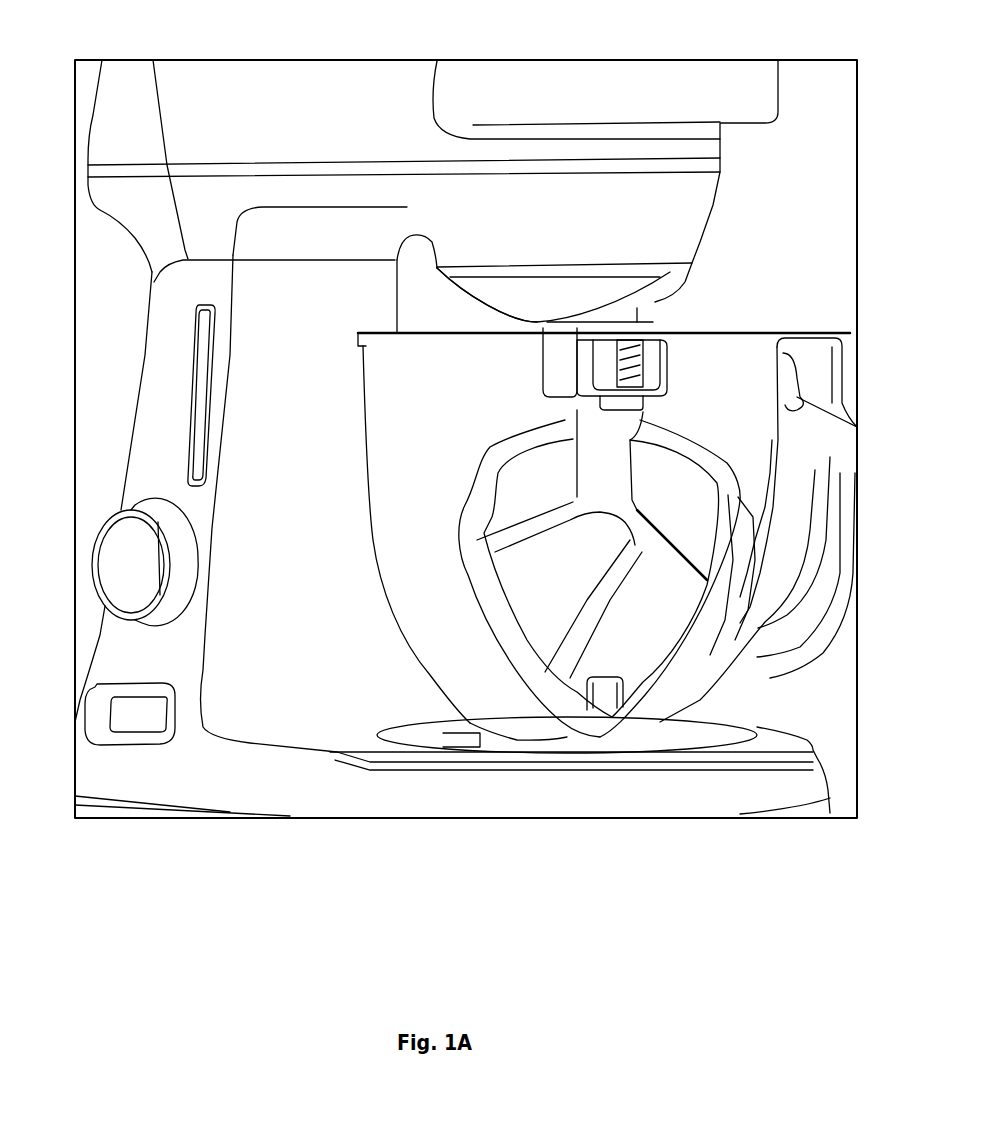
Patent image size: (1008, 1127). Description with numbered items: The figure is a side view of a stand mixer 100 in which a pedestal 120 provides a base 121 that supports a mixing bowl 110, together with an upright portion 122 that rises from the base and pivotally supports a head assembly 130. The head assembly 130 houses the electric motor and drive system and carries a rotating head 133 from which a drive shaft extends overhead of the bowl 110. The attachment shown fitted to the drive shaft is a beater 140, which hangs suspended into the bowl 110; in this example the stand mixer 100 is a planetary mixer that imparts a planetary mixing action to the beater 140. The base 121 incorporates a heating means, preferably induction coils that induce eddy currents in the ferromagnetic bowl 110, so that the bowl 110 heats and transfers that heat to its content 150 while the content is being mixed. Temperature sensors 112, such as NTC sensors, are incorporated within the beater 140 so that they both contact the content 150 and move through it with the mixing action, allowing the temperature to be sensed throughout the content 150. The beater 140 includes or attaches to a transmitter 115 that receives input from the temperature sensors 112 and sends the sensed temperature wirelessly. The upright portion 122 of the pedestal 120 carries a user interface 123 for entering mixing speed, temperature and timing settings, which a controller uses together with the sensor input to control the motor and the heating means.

The stand mixer 100 is at (162, 32).
The mixing bowl 110 is at (740, 620).
The temperature sensors 112 is at (606, 670).
The transmitter 115 is at (633, 377).
The pedestal 120 is at (250, 795).
The base 121 is at (500, 753).
The upright portion 122 is at (167, 400).
The user interface 123 is at (120, 717).
The head assembly 130 is at (683, 223).
The rotating head 133 is at (692, 265).
The beater 140 is at (730, 473).
The content 150 is at (497, 708).